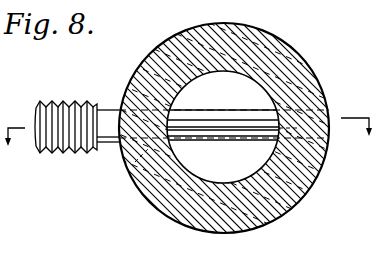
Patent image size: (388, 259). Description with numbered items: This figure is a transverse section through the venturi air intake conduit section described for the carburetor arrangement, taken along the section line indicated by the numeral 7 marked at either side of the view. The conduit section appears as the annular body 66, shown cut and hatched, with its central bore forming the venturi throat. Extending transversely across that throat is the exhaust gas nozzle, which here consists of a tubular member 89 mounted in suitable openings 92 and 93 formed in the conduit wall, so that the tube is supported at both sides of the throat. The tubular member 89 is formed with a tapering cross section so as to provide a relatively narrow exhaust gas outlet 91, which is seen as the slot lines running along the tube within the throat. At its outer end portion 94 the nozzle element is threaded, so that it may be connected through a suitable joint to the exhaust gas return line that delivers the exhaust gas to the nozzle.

The section line indicator 7 is at (191, 119).
The annular body 66 is at (291, 80).
The tubular member 89 is at (213, 110).
The exhaust gas outlet 91 is at (240, 125).
The opening 92 is at (312, 138).
The opening 93 is at (135, 162).
The outer end portion 94 is at (63, 155).